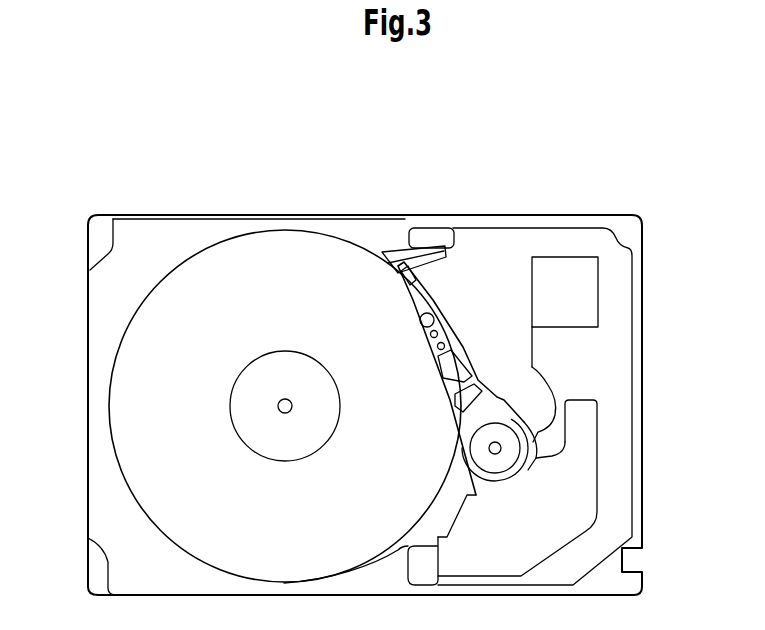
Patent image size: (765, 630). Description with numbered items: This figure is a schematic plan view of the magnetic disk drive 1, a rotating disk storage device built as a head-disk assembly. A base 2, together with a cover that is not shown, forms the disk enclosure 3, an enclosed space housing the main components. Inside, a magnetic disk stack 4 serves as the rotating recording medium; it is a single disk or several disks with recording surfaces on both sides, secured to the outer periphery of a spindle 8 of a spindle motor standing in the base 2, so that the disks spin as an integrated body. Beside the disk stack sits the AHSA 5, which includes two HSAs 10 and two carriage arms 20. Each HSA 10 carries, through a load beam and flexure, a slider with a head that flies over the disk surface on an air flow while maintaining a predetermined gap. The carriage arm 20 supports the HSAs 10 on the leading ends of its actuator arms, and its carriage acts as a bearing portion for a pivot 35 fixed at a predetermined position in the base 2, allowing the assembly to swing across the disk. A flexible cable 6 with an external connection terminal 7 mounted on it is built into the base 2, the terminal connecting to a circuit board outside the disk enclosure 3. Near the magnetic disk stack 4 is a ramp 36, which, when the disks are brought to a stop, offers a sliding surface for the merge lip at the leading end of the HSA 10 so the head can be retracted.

The magnetic disk drive 1 is at (404, 181).
The base 2 is at (637, 424).
The disk enclosure 3 is at (660, 225).
The magnetic disk stack 4 is at (130, 400).
The AHSA 5 is at (469, 351).
The flexible cable 6 is at (533, 366).
The external connection terminal 7 is at (565, 290).
The spindle 8 is at (280, 411).
The HSA 10 is at (410, 296).
The carriage arm 20 is at (440, 372).
The pivot 35 is at (490, 446).
The ramp 36 is at (445, 262).